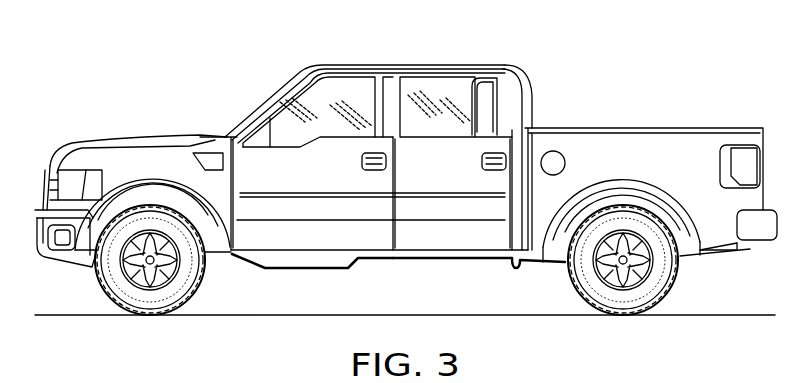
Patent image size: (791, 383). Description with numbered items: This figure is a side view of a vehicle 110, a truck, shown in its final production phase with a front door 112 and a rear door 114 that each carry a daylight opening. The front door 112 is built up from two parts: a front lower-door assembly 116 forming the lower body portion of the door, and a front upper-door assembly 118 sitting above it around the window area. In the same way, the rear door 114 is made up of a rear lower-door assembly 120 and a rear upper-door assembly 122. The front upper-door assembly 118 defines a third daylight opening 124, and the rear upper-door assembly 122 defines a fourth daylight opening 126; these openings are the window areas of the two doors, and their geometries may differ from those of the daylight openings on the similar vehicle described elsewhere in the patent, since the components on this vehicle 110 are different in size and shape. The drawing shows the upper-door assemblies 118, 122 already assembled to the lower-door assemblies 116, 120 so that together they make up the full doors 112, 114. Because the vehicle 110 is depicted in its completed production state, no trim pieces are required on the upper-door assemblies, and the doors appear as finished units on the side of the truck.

The vehicle 110 is at (203, 57).
The front door 112 is at (297, 212).
The rear door 114 is at (448, 208).
The front lower-door assembly 116 is at (350, 233).
The front upper-door assembly 118 is at (315, 107).
The rear lower-door assembly 120 is at (408, 233).
The rear upper-door assembly 122 is at (427, 88).
The third daylight opening 124 is at (348, 102).
The fourth daylight opening 126 is at (465, 90).